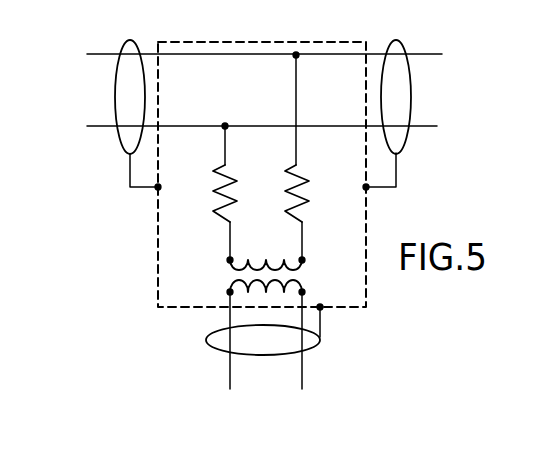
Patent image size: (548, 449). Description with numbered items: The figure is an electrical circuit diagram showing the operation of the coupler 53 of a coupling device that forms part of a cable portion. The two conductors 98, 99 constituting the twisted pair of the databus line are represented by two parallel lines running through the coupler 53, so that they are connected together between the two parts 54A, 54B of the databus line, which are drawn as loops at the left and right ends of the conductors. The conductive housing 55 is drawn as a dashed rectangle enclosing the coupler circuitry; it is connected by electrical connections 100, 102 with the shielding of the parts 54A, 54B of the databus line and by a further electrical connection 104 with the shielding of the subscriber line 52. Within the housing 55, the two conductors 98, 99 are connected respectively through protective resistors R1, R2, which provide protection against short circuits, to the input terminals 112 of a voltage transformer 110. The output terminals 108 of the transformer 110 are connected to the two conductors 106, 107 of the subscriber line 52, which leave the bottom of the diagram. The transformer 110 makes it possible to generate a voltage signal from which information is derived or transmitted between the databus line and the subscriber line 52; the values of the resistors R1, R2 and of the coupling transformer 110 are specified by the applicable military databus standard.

The subscriber line 52 is at (273, 370).
The coupler 53 is at (131, 237).
The first part of the databus line 54A is at (90, 97).
The second part of the databus line 54B is at (441, 97).
The housing 55 is at (158, 285).
The conductor 98 is at (97, 54).
The conductor 99 is at (95, 127).
The electrical connection 100 is at (130, 187).
The electrical connection 102 is at (397, 166).
The electrical connection 104 is at (316, 346).
The conductor 106 is at (230, 376).
The conductor 107 is at (302, 376).
The output terminals 108 is at (230, 292).
The voltage transformer 110 is at (268, 255).
The input terminals 112 is at (233, 258).
The protective resistor R1 is at (237, 181).
The protective resistor R2 is at (310, 181).